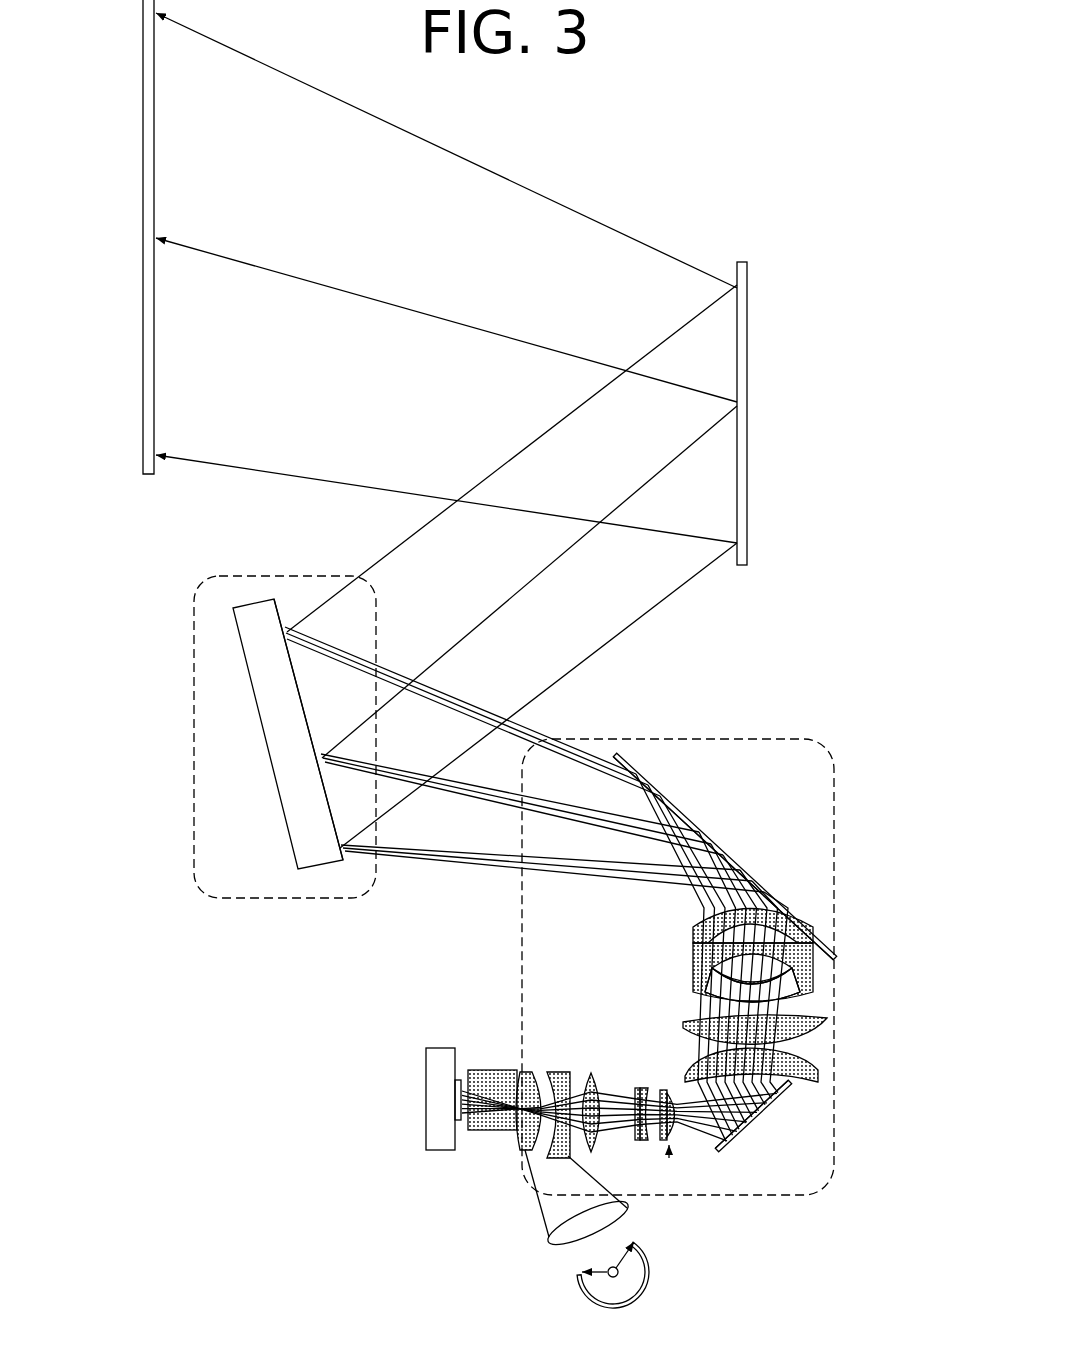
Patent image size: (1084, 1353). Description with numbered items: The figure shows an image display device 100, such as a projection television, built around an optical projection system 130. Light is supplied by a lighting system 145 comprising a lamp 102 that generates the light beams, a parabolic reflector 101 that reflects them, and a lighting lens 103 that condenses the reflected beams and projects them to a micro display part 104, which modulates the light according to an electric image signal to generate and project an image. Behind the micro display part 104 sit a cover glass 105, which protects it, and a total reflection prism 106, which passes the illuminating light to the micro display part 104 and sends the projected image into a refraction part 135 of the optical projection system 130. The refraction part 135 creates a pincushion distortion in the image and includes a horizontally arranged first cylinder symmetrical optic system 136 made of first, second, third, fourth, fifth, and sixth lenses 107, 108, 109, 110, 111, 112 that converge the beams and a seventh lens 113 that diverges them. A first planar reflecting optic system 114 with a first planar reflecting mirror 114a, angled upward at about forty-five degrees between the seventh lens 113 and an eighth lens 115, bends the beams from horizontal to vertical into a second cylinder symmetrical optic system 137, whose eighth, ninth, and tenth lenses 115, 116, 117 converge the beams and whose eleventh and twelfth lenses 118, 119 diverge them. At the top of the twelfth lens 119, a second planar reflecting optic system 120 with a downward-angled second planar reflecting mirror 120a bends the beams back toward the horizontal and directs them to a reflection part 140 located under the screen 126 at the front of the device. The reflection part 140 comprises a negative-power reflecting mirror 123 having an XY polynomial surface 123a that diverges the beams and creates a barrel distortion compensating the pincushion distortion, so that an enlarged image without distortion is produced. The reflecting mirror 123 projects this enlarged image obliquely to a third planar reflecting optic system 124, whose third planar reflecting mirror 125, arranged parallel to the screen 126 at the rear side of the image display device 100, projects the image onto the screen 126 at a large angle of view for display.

The image display device 100 is at (657, 216).
The parabolic reflector 101 is at (582, 1283).
The lamp 102 is at (607, 1268).
The lighting lens 103 is at (555, 1230).
The micro display part 104 is at (426, 1064).
The cover glass 105 is at (456, 1116).
The total reflection prism 106 is at (470, 1070).
The first lens 107 is at (523, 1072).
The second lens 108 is at (548, 1072).
The third lens 109 is at (590, 1075).
The fourth lens 110 is at (637, 1088).
The fifth lens 111 is at (645, 1088).
The sixth lens 112 is at (664, 1090).
The seventh lens 113 is at (677, 1092).
The first planar reflecting optic system 114 is at (792, 1093).
The first planar reflecting mirror 114a is at (770, 1100).
The eighth lens 115 is at (818, 1074).
The ninth lens 116 is at (827, 1019).
The tenth lens 117 is at (812, 985).
The eleventh lens 118 is at (810, 948).
The twelfth lens 119 is at (812, 928).
The second planar reflecting optic system 120 is at (650, 779).
The second planar reflecting mirror 120a is at (678, 814).
The reflecting mirror 123 is at (280, 727).
The XY polynomial surface 123a is at (300, 697).
The third planar reflecting optic system 124 is at (752, 537).
The third planar reflecting mirror 125 is at (748, 313).
The screen 126 is at (145, 163).
The optical projection system 130 is at (870, 597).
The refraction part 135 is at (772, 739).
The first cylinder symmetrical optic system 136 is at (675, 990).
The second cylinder symmetrical optic system 137 is at (895, 903).
The reflection part 140 is at (380, 617).
The lighting system 145 is at (470, 1216).